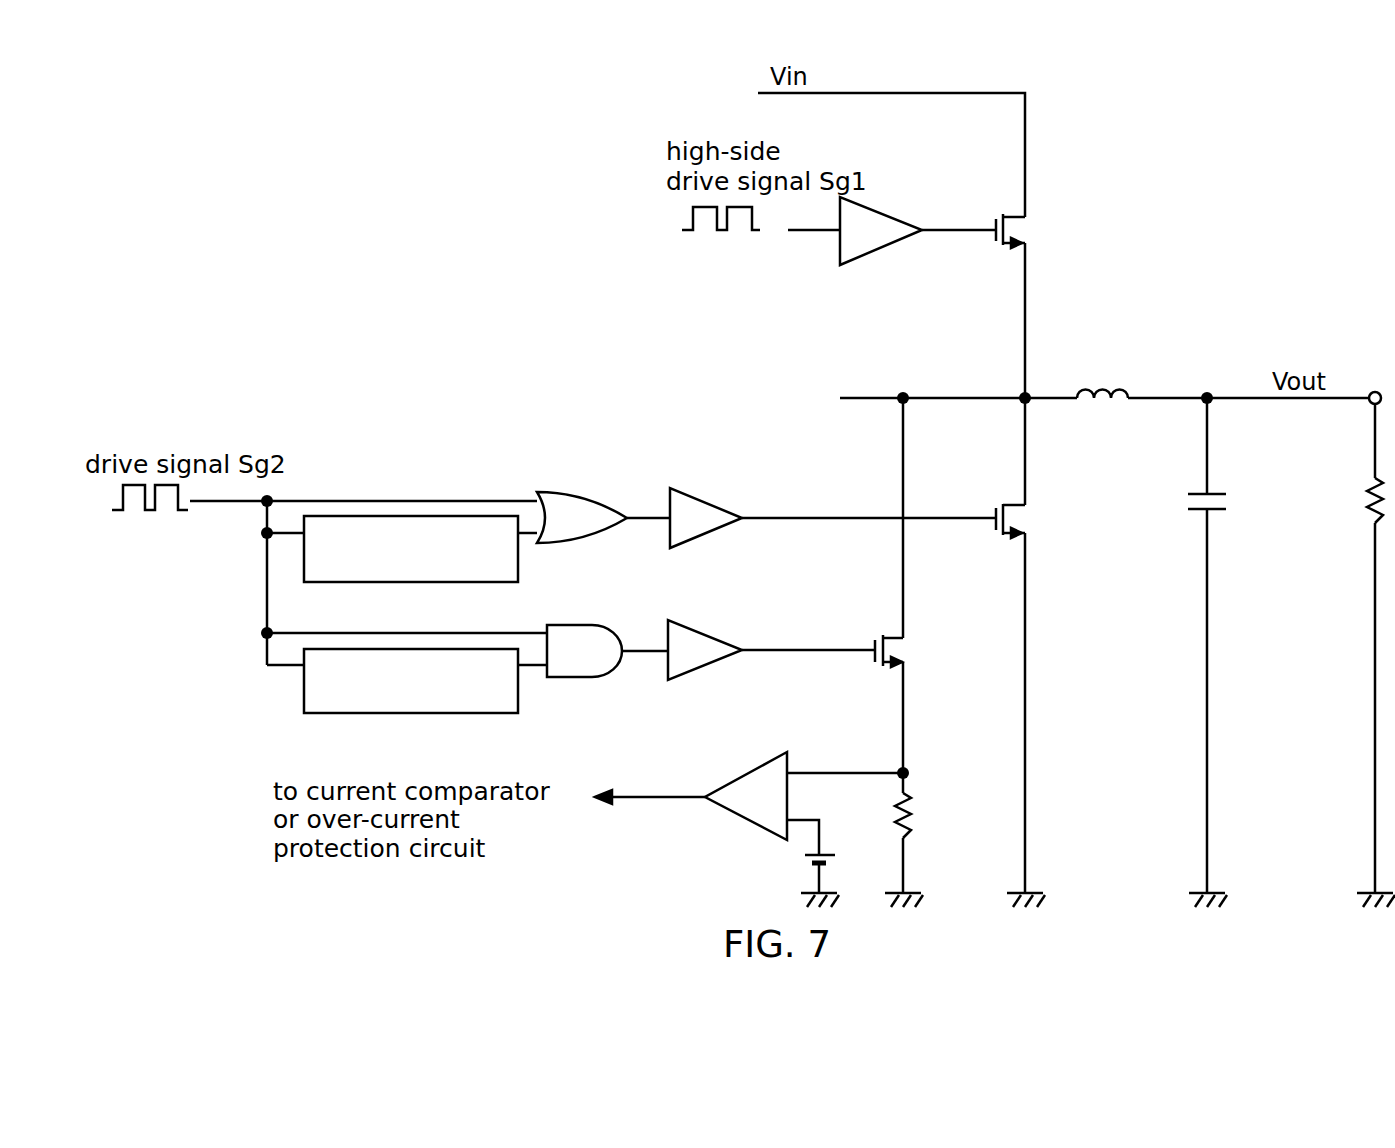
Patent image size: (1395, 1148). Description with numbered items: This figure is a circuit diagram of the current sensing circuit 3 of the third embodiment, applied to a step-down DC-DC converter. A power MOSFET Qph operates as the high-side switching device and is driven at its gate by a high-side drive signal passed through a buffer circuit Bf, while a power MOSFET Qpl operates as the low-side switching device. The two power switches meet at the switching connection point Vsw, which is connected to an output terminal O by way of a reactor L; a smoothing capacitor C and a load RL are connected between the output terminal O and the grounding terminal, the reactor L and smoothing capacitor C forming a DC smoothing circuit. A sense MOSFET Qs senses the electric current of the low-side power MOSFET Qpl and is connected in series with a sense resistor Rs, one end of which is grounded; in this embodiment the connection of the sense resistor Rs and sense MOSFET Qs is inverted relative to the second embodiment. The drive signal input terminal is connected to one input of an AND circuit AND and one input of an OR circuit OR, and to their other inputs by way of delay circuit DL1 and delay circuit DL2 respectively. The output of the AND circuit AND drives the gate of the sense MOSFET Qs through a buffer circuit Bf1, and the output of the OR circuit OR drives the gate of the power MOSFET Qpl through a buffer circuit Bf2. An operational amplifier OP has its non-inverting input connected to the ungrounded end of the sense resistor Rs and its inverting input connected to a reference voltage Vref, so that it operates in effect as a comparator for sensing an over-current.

The current sensing circuit 3 is at (436, 212).
The buffer circuit Bf is at (877, 266).
The power MOSFET Qph is at (1027, 232).
The switching node Vsw is at (1020, 395).
The reactor L is at (1106, 386).
The output terminal O is at (1371, 390).
The smoothing capacitor C is at (1186, 506).
The load RL is at (1370, 520).
The delay circuit DL2 is at (407, 514).
The delay circuit DL1 is at (403, 647).
The OR circuit OR is at (589, 490).
The AND circuit AND is at (585, 623).
The buffer circuit Bf2 is at (706, 487).
The buffer circuit Bf1 is at (712, 620).
The power MOSFET Qpl is at (1027, 522).
The sense MOSFET Qs is at (905, 650).
The sense resistor Rs is at (915, 812).
The operational amplifier OP is at (736, 773).
The reference voltage Vref is at (806, 863).